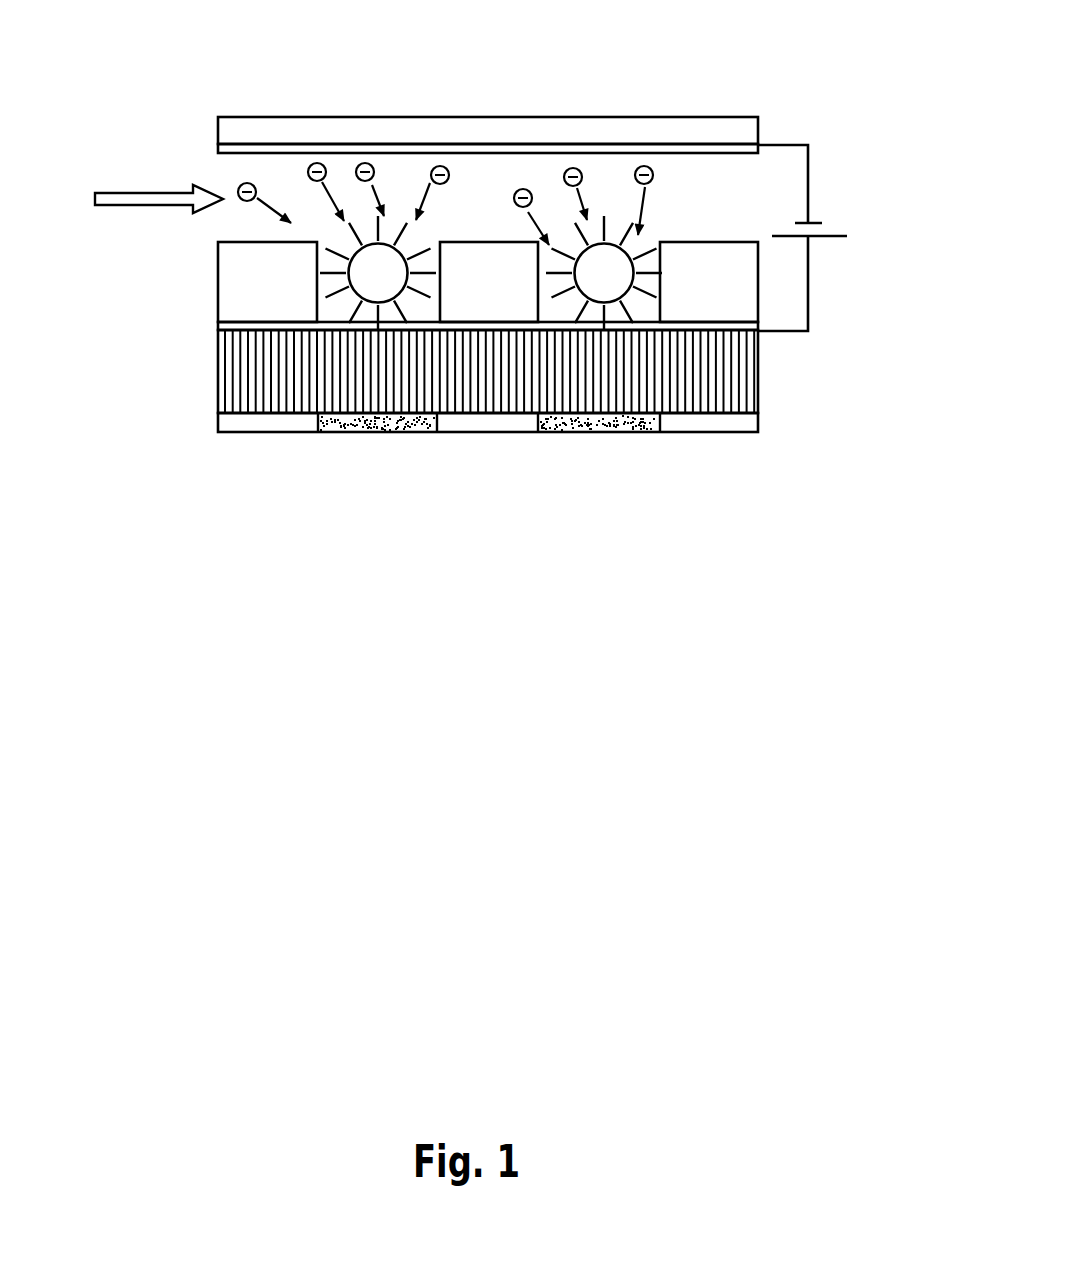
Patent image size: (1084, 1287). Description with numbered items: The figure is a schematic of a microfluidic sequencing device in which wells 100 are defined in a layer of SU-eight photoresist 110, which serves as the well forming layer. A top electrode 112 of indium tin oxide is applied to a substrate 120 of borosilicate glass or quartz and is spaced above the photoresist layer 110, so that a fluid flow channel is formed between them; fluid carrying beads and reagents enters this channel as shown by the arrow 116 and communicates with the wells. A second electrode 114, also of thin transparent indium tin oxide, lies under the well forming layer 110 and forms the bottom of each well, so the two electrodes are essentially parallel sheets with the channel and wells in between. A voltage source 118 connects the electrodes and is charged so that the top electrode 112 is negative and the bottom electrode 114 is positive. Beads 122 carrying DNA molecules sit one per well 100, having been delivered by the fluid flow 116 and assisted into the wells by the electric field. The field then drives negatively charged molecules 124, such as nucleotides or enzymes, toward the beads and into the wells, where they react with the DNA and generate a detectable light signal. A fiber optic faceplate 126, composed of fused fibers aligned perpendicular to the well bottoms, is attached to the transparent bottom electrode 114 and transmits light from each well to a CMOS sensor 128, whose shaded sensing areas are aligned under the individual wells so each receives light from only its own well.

The wells 100 is at (332, 309).
The layer of SU-8 photoresist 110 is at (240, 292).
The electrode 112 is at (763, 153).
The second electrode 114 is at (761, 321).
The fluid flow channel 116 is at (141, 185).
The voltage source 118 is at (811, 220).
The substrate 120 is at (692, 126).
The beads 122 is at (597, 260).
The negatively charged molecules 124 is at (445, 139).
The fiber optic faceplate 126 is at (215, 368).
The CMOS sensor 128 is at (771, 423).